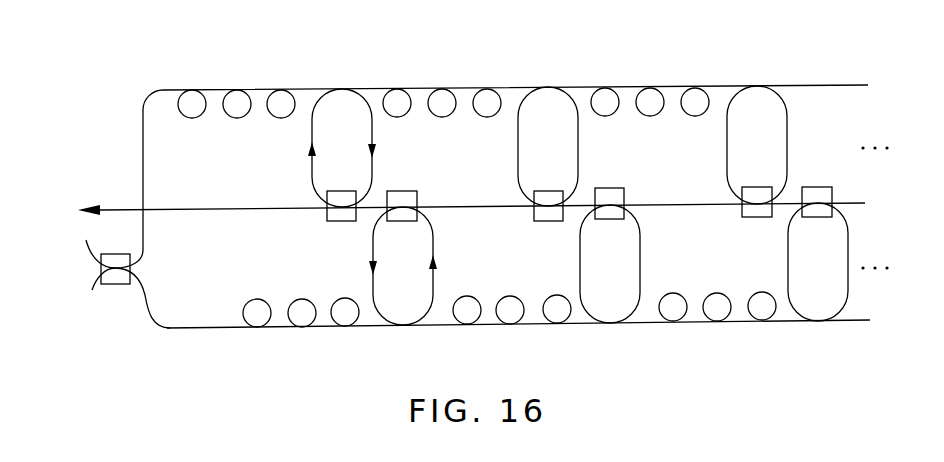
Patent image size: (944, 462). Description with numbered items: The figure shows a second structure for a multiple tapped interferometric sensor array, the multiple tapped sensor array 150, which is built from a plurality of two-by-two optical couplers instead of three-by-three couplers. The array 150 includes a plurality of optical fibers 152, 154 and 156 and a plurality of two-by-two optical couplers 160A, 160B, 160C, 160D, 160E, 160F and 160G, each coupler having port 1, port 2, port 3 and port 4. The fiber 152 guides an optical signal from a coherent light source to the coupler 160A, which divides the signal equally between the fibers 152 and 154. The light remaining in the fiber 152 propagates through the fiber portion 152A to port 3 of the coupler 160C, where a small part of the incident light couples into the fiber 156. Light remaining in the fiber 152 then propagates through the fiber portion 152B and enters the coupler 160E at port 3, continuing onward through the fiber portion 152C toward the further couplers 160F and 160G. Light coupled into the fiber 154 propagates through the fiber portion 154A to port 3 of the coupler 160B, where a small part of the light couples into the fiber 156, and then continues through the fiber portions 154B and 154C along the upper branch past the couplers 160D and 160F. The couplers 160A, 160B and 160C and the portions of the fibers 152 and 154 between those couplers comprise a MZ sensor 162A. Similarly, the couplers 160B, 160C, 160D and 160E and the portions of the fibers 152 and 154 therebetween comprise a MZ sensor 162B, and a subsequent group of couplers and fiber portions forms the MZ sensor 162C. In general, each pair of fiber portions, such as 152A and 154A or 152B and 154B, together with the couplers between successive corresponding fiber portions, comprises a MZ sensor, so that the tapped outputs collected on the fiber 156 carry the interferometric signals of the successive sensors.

The multiple tapped sensor array 150 is at (332, 356).
The optical fiber 152 is at (92, 290).
The fiber portion 152A is at (248, 333).
The fiber portion 152B is at (520, 333).
The fiber portion 152C is at (700, 330).
The optical fiber 154 is at (143, 163).
The fiber portion 154A is at (193, 83).
The fiber portion 154B is at (397, 83).
The fiber portion 154C is at (603, 83).
The optical fiber 156 is at (198, 208).
The 2×2 optical coupler 160A is at (117, 289).
The 2×2 optical coupler 160B is at (333, 227).
The 2×2 optical coupler 160C is at (420, 188).
The 2×2 optical coupler 160D is at (537, 225).
The 2×2 optical coupler 160E is at (620, 185).
The 2×2 optical coupler 160F is at (743, 221).
The 2×2 optical coupler 160G is at (817, 183).
The MZ sensor 162A is at (270, 83).
The MZ sensor 162B is at (472, 83).
The MZ sensor 162C is at (680, 83).
The port 1 is at (316, 204).
The port 2 is at (318, 214).
The port 3 is at (366, 202).
The port 4 is at (361, 213).